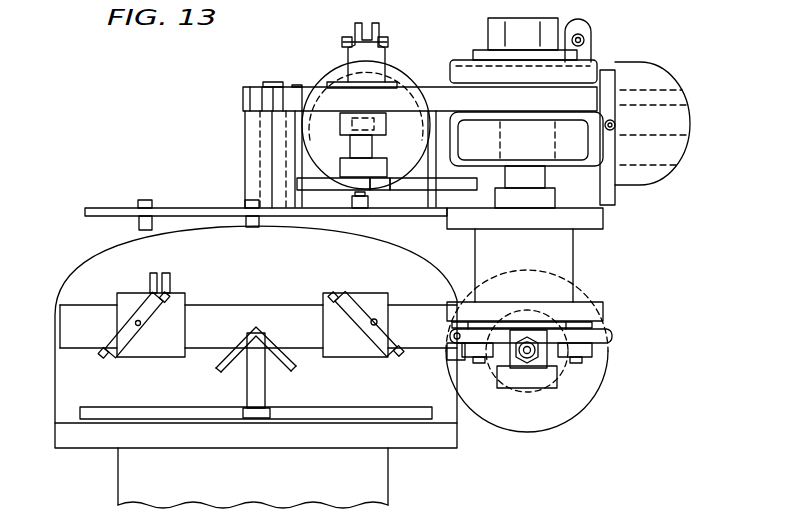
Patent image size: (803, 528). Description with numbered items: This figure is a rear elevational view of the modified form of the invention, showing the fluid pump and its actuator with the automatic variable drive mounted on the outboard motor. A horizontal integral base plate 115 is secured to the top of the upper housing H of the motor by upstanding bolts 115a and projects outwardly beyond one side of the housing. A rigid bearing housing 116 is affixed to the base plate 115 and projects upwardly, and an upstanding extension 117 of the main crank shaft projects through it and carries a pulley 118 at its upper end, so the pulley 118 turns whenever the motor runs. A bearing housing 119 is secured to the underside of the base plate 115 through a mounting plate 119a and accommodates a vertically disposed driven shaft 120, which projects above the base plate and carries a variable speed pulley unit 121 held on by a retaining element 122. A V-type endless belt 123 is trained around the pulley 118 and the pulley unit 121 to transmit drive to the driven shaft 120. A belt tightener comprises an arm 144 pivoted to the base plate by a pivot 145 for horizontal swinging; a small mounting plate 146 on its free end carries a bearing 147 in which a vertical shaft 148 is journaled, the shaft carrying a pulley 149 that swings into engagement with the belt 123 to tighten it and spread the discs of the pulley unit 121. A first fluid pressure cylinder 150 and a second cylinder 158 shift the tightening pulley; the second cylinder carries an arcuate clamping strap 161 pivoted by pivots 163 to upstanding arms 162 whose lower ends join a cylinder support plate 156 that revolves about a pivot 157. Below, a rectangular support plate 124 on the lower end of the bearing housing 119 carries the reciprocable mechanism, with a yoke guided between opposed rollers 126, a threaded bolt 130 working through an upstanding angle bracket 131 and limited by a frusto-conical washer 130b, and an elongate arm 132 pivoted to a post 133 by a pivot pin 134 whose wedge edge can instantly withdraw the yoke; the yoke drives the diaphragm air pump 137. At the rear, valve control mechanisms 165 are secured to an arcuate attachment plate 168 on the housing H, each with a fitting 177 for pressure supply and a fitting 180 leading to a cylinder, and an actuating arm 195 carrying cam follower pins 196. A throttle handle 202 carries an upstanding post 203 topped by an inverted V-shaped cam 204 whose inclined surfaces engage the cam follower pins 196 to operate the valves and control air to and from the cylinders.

The upper housing H is at (70, 377).
The base plate 115 is at (120, 210).
The upstanding bolts 115a is at (153, 200).
The column 116 is at (253, 137).
The crank shaft extension 117 is at (278, 83).
The pulley 118 is at (252, 88).
The bearing housing 119 is at (542, 259).
The mounting plate 119a is at (597, 218).
The driven shaft 120 is at (526, 160).
The variable speed pulley unit 121 is at (588, 62).
The retaining element 122 is at (498, 33).
The belt 123 is at (424, 90).
The support plate 124 is at (603, 309).
The rollers 126 is at (593, 349).
The threaded bolt 130 is at (523, 338).
The frusto-conical washer 130b is at (522, 366).
The angle bracket 131 is at (546, 362).
The elongate arm 132 is at (612, 333).
The post 133 is at (453, 326).
The pivot pin 134 is at (453, 336).
The diaphragm air pump 137 is at (585, 405).
The arm 144 is at (423, 182).
The pivot 145 is at (523, 143).
The mounting plate 146 is at (308, 184).
The bearing 147 is at (386, 168).
The shaft 148 is at (357, 150).
The pulley 149 is at (350, 85).
The first fluid pressure cylinder 150 is at (377, 73).
The cylinder support plate 156 is at (337, 208).
The pivot 157 is at (375, 200).
The second cylinder 158 is at (678, 108).
The clamping strap 161 is at (605, 93).
The upstanding arms 162 is at (615, 155).
The pivots 163 is at (616, 124).
The valve control mechanism 165 is at (114, 286).
The attachment plate 168 is at (290, 307).
The fitting 177 is at (151, 278).
The fitting 180 is at (170, 282).
The actuating arm 195 is at (118, 342).
The cam follower pins 196 is at (251, 324).
The throttle handle 202 is at (257, 413).
The post 203 is at (257, 390).
The inverted V-shaped cam 204 is at (255, 333).